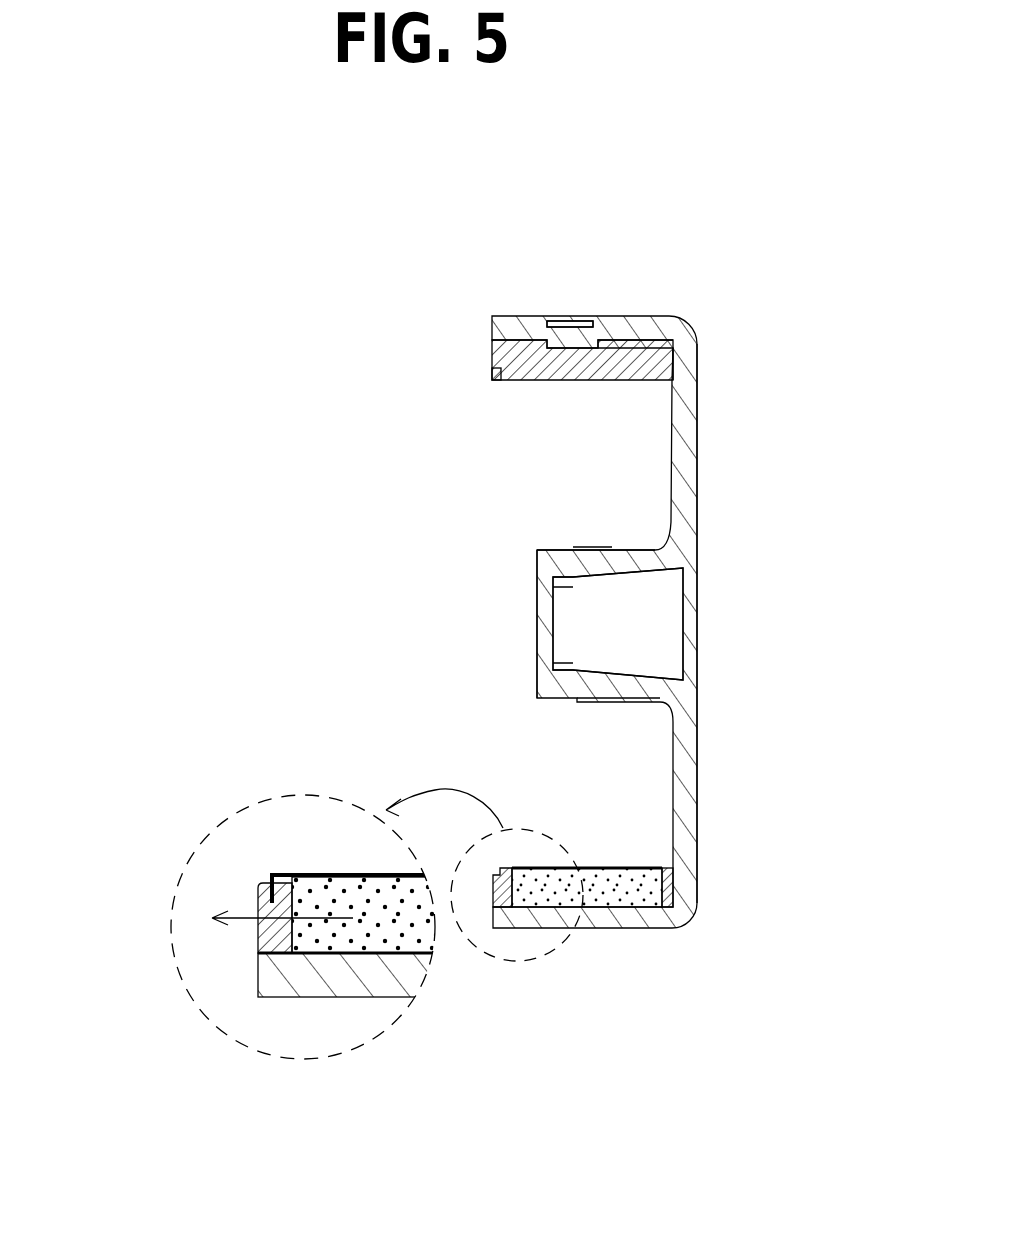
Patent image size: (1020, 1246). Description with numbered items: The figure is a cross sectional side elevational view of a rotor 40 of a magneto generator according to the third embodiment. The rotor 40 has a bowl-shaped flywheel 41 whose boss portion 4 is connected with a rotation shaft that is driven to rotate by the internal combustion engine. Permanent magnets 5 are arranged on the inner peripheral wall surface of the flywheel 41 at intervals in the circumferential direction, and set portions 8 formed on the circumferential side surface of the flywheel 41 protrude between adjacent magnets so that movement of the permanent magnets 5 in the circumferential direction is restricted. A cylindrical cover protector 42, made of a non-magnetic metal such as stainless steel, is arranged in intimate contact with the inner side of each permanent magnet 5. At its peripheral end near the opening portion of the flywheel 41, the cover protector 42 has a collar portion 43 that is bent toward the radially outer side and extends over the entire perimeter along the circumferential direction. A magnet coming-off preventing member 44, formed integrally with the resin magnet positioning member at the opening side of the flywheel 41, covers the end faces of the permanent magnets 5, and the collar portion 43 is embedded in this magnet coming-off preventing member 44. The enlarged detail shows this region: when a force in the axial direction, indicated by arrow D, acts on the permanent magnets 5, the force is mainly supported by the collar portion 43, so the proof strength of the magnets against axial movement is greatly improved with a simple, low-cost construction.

The rotor 40 is at (735, 296).
The flywheel 41 is at (697, 435).
The cover protector 42 is at (558, 382).
The collar portion 43 is at (497, 372).
The magnet coming-off preventing member 44 is at (258, 947).
The boss portion 4 is at (615, 562).
The permanent magnets 5 is at (624, 877).
The set portions 8 is at (577, 340).
The arrow D is at (240, 906).